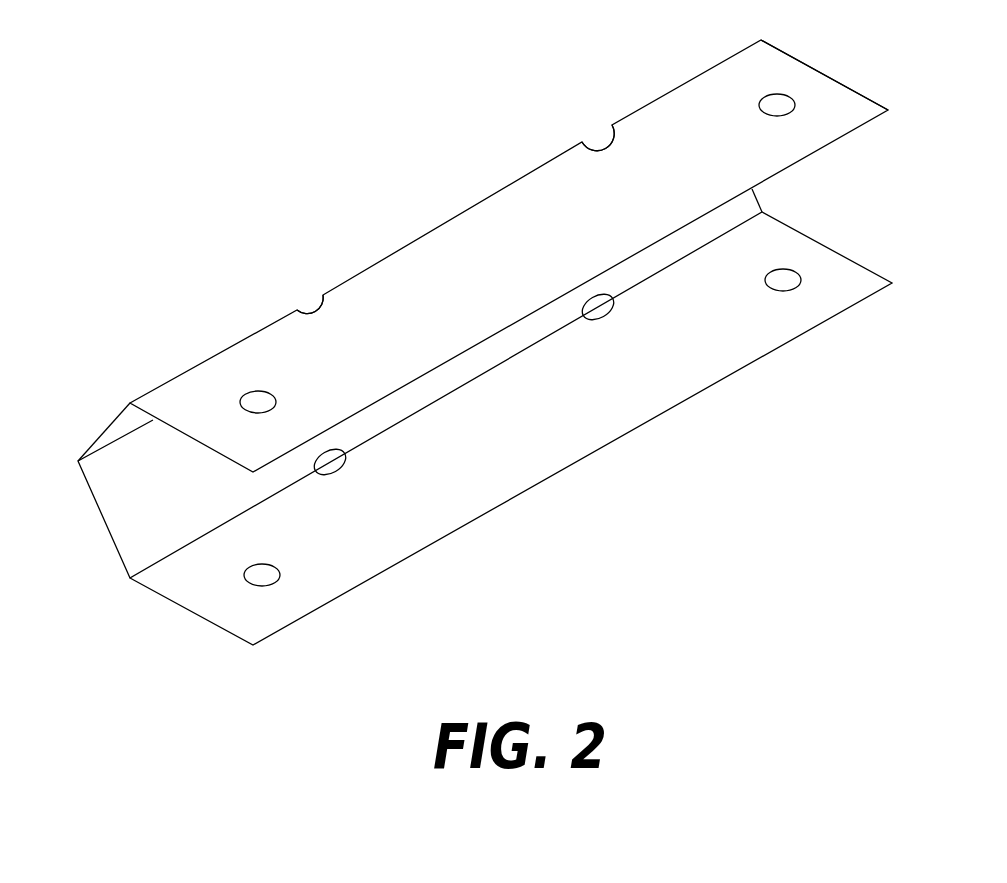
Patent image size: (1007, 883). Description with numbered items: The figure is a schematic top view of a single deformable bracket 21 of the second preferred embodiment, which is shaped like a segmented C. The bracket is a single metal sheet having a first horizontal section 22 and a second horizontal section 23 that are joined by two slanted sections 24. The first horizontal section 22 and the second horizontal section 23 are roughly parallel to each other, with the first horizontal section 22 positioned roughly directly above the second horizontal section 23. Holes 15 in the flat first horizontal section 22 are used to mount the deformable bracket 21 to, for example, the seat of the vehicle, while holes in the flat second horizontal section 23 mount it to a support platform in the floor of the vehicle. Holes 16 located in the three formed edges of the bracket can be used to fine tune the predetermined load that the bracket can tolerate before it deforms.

The holes 15 is at (770, 102).
The holes 16 is at (310, 300).
The deformable bracket 21 is at (453, 216).
The first horizontal section 22 is at (848, 87).
The second horizontal section 23 is at (185, 608).
The slanted sections 24 is at (95, 440).